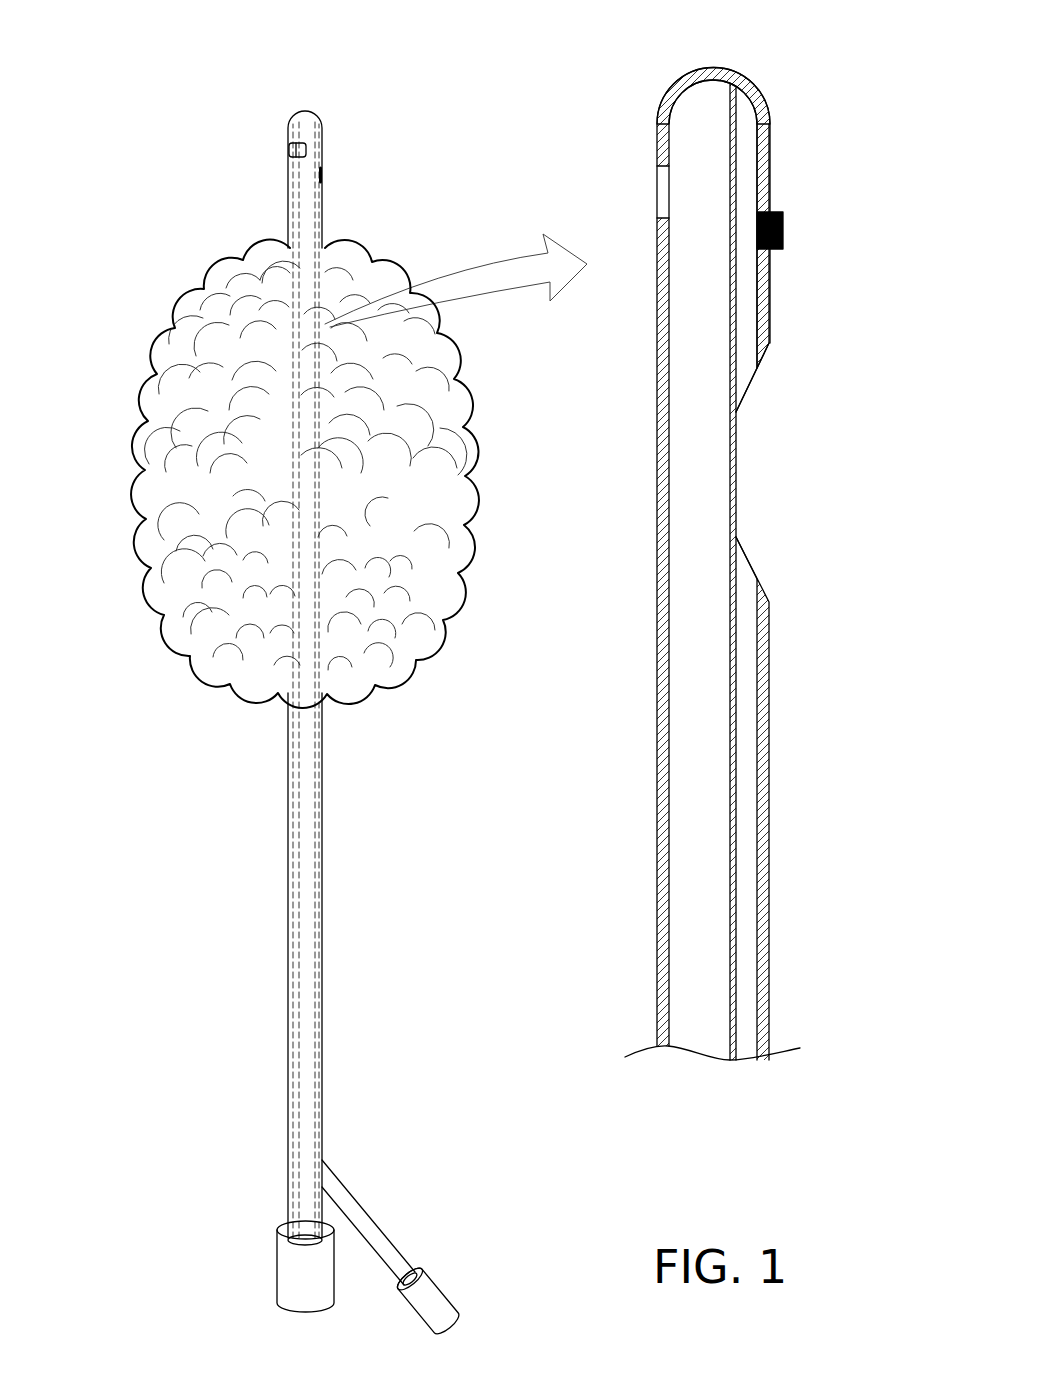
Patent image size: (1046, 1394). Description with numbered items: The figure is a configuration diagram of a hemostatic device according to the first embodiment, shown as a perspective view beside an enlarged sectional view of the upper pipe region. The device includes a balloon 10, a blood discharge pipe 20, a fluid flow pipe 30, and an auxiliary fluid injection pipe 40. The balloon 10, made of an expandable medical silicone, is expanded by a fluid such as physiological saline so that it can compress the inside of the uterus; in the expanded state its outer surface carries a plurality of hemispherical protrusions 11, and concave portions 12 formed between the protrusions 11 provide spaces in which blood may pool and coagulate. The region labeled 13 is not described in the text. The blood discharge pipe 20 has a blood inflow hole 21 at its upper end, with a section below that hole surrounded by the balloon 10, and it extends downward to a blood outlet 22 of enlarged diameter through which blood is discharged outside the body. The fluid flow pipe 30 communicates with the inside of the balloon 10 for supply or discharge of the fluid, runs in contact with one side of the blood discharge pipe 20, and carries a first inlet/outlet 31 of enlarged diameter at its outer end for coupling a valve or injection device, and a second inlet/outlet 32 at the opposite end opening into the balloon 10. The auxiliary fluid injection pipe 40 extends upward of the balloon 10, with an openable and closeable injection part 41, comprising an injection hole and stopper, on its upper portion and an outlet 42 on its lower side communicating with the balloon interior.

The balloon 10 is at (302, 442).
The protrusions 11 is at (135, 402).
The concave portions 12 is at (145, 428).
The core portion 13 is at (275, 262).
The blood discharge pipe 20 is at (306, 112).
The blood inflow hole 21 is at (290, 152).
The blood outlet 22 is at (290, 1316).
The fluid flow pipe 30 is at (330, 1110).
The first inlet/outlet 31 is at (458, 1332).
The second inlet/outlet 32 is at (750, 560).
The auxiliary fluid injection pipe 40 is at (322, 176).
The injection part 41 is at (783, 230).
The outlet 42 is at (750, 390).